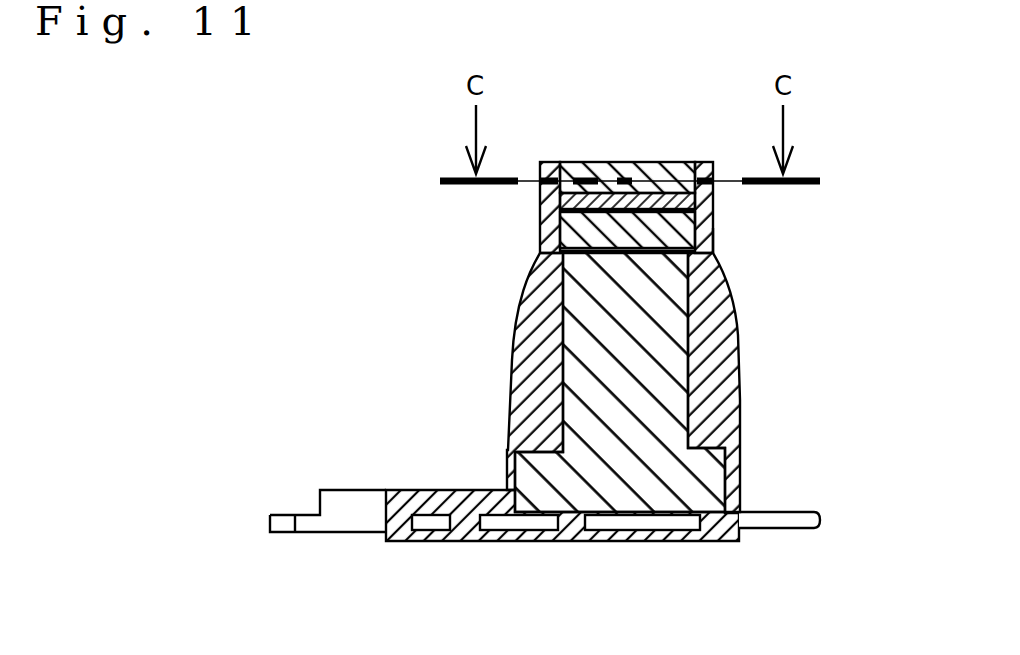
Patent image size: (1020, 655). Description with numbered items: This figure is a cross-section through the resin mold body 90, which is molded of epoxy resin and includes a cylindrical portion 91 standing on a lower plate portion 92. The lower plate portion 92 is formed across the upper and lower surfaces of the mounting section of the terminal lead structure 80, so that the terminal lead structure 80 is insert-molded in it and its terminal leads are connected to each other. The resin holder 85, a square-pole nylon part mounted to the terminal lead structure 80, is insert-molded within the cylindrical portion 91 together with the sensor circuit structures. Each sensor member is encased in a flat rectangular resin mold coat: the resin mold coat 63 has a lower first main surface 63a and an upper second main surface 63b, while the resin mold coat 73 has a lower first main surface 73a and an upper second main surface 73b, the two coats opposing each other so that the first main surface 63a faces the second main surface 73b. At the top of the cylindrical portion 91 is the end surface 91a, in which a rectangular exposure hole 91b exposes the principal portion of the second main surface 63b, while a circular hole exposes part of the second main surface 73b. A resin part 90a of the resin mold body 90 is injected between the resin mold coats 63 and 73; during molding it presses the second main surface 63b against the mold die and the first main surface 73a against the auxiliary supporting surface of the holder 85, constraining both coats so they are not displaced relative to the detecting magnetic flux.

The resin mold coat 63 is at (609, 190).
The first main surface 63a is at (540, 207).
The second main surface 63b is at (603, 162).
The resin mold coat 73 is at (540, 253).
The first main surface 73a is at (647, 258).
The second main surface 73b is at (713, 204).
The terminal lead structure 80 is at (645, 520).
The resin holder 85 is at (643, 397).
The resin mold body 90 is at (717, 337).
The resin part 90a is at (713, 238).
The cylindrical portion 91 is at (540, 333).
The end surface 91a is at (699, 162).
The exposure hole 91b is at (567, 162).
The lower plate portion 92 is at (432, 547).